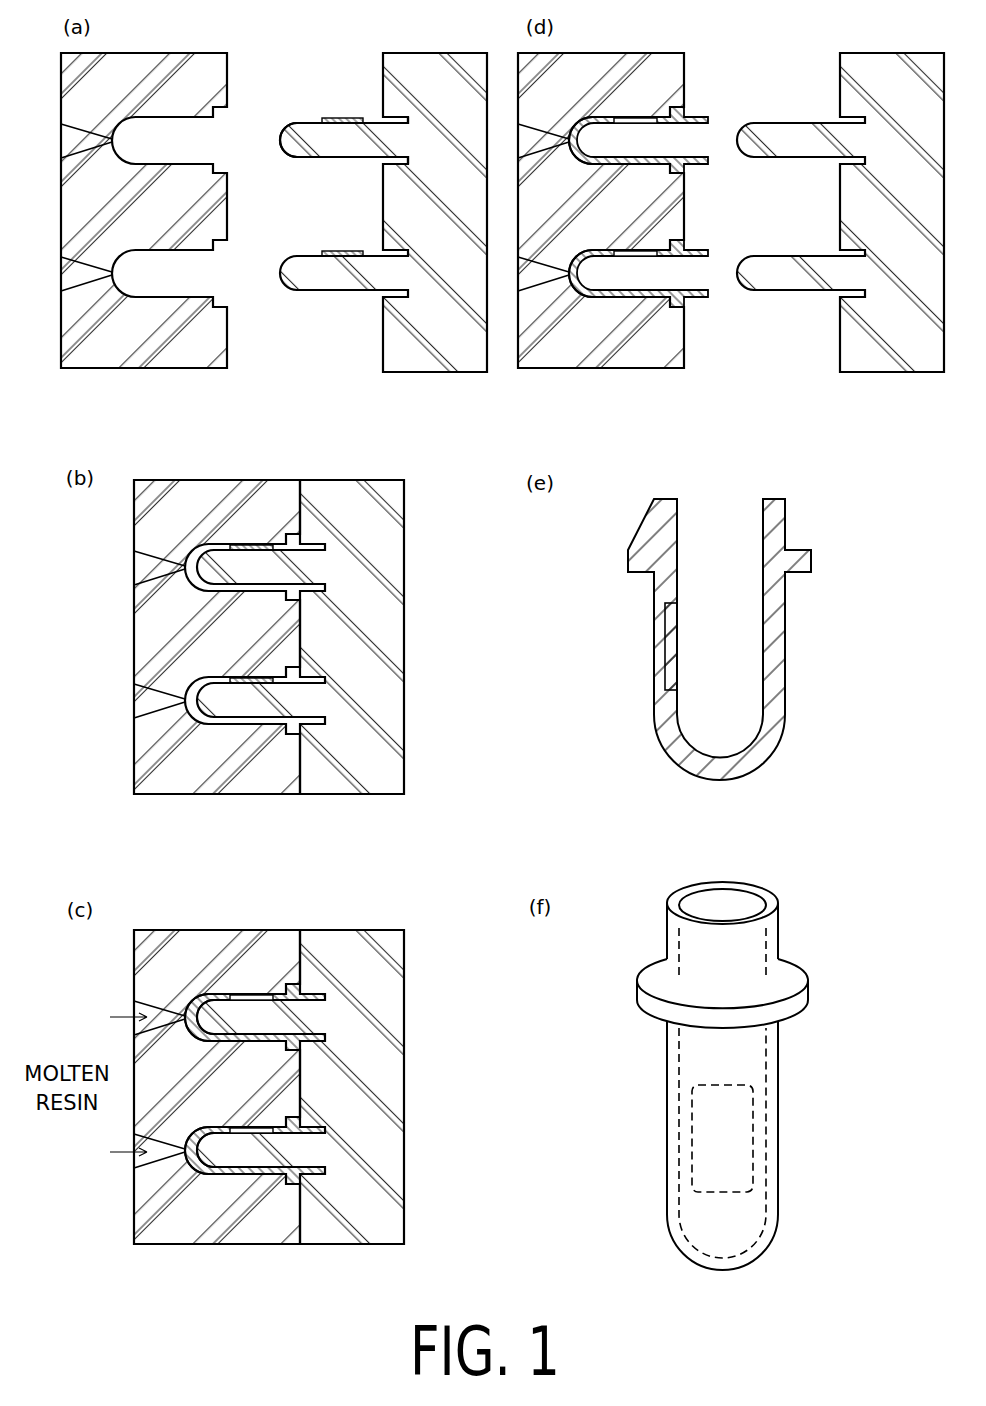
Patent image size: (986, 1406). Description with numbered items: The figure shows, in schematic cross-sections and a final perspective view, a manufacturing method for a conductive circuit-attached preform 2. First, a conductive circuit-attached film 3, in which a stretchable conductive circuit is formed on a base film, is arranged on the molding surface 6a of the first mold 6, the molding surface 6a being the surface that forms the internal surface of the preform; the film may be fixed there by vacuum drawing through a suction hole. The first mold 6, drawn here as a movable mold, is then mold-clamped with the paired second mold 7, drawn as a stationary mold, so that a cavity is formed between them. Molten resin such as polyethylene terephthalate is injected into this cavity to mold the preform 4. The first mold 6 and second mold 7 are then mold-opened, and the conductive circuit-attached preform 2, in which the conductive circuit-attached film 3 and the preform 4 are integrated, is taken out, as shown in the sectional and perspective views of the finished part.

The conductive circuit-attached preform 2 is at (758, 856).
The conductive circuit-attached film 3 is at (339, 117).
The preform 4 is at (783, 644).
The first mold 6 is at (431, 53).
The molding surface 6a is at (299, 123).
The second mold 7 is at (144, 53).